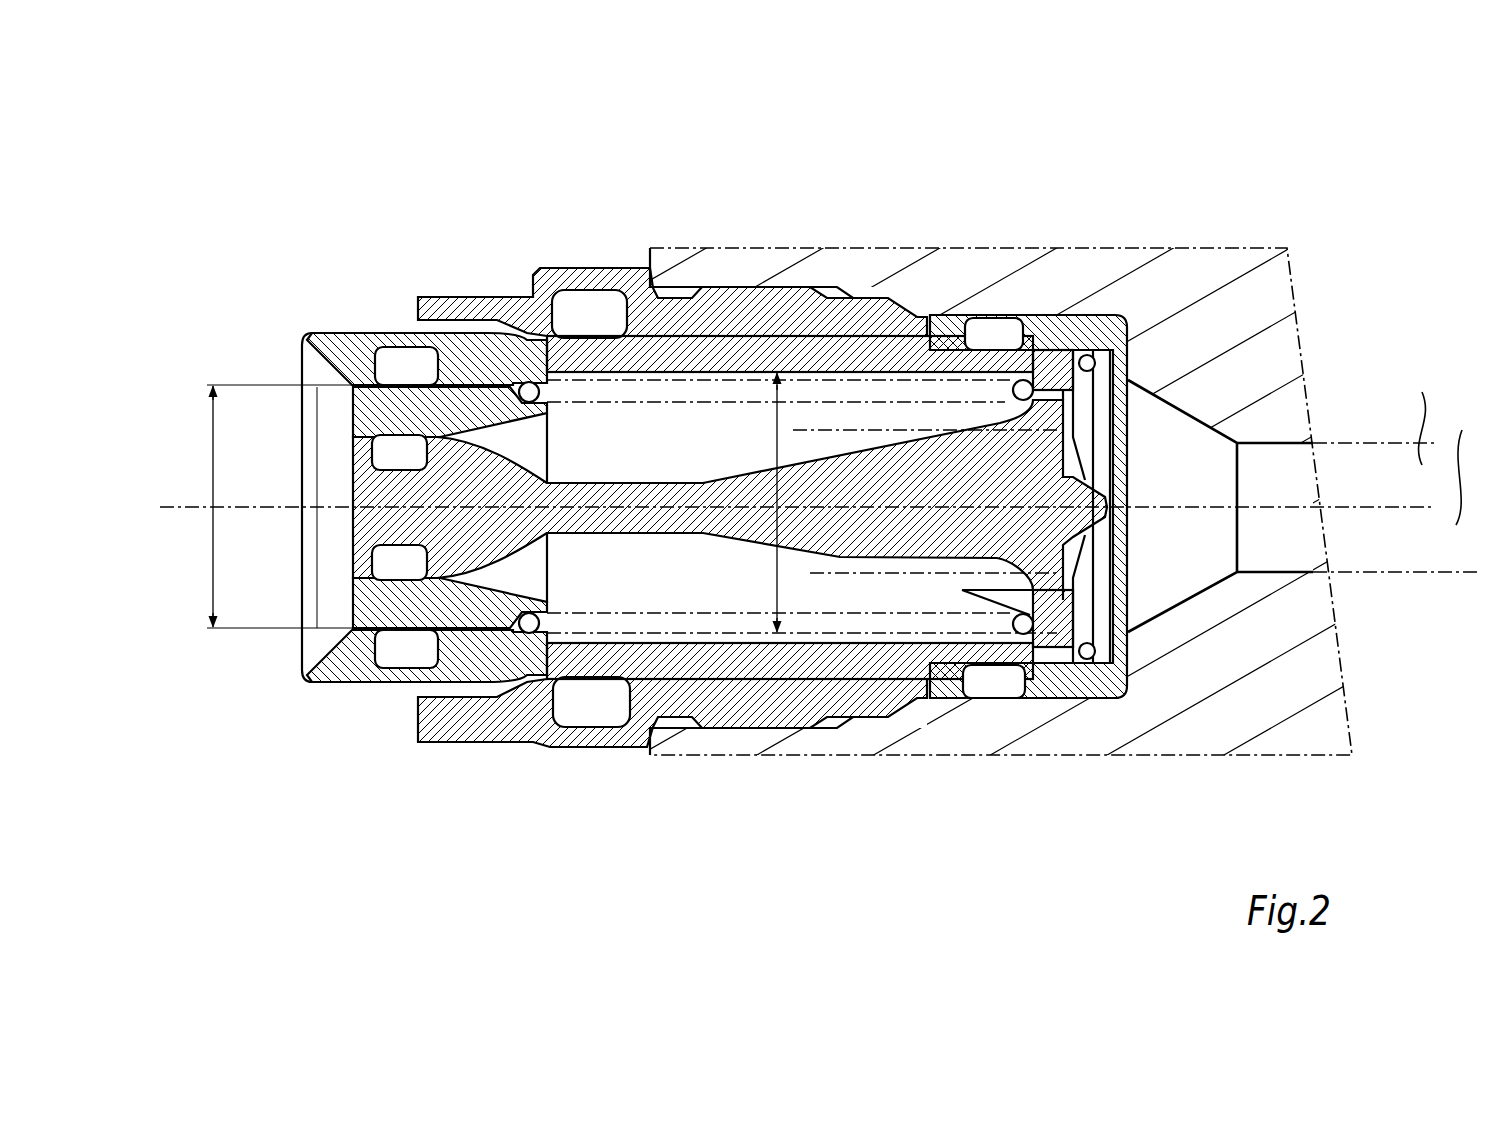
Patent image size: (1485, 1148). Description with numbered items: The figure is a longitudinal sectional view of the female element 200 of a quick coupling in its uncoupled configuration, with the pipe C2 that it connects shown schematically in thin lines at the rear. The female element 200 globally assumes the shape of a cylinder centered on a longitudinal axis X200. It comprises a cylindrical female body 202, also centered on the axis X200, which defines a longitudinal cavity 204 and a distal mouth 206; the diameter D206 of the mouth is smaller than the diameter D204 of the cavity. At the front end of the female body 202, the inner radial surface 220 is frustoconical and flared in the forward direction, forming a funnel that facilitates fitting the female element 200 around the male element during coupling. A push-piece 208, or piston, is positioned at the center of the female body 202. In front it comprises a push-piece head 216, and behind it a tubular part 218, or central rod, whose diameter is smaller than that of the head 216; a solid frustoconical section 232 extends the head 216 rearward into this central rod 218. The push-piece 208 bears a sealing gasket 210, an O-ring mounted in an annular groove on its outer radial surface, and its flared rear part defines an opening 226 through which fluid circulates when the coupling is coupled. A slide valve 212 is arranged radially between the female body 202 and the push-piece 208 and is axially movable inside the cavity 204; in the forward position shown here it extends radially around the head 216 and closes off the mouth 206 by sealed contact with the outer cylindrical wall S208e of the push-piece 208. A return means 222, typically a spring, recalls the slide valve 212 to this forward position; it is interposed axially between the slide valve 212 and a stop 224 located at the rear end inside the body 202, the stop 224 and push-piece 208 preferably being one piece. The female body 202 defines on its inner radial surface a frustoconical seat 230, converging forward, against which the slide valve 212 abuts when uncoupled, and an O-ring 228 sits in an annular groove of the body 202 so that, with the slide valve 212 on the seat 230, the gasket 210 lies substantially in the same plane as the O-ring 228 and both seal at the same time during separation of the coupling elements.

The female element 200 is at (330, 212).
The female body 202 is at (478, 722).
The longitudinal cavity 204 is at (668, 380).
The distal mouth 206 is at (490, 440).
The push-piece 208 is at (584, 456).
The sealing gasket 210 is at (387, 452).
The slide valve 212 is at (365, 630).
The push-piece head 216 is at (393, 525).
The tubular part 218 is at (643, 510).
The inner radial surface 220 is at (312, 378).
The return means 222 is at (937, 392).
The stop 224 is at (1060, 378).
The opening 226 is at (1010, 442).
The O-ring 228 is at (403, 648).
The seat 230 is at (548, 603).
The solid frustoconical section 232 is at (478, 558).
The outer cylindrical wall S208e is at (368, 426).
The longitudinal axis X200 is at (767, 506).
The diameter of the mouth D206 is at (271, 506).
The diameter of the cavity D204 is at (763, 502).
The pipe C2 is at (1436, 444).